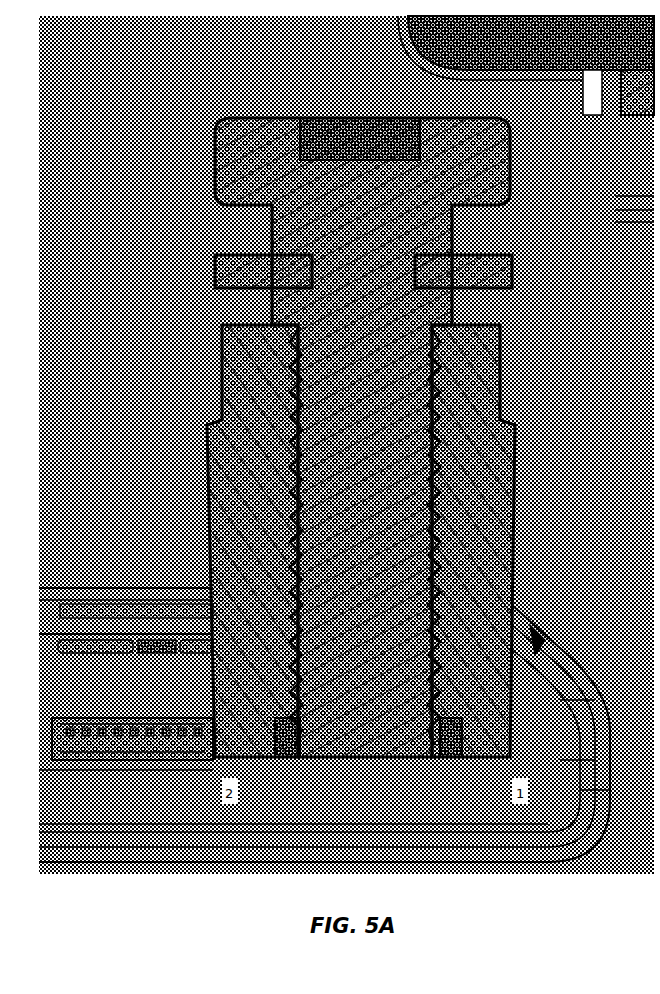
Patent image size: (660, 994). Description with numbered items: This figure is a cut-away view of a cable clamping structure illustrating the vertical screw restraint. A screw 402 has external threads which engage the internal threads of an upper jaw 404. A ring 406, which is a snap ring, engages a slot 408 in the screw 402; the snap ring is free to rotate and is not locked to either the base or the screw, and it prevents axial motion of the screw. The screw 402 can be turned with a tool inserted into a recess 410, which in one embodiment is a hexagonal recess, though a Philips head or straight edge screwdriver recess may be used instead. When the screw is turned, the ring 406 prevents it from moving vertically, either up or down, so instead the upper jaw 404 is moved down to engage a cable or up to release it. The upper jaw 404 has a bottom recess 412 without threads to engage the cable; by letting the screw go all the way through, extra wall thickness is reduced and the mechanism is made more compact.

The screw 402 is at (278, 160).
The upper jaw 404 is at (242, 483).
The ring 406 is at (225, 278).
The slot 408 is at (298, 248).
The recess 410 is at (343, 136).
The bottom recess 412 is at (278, 745).